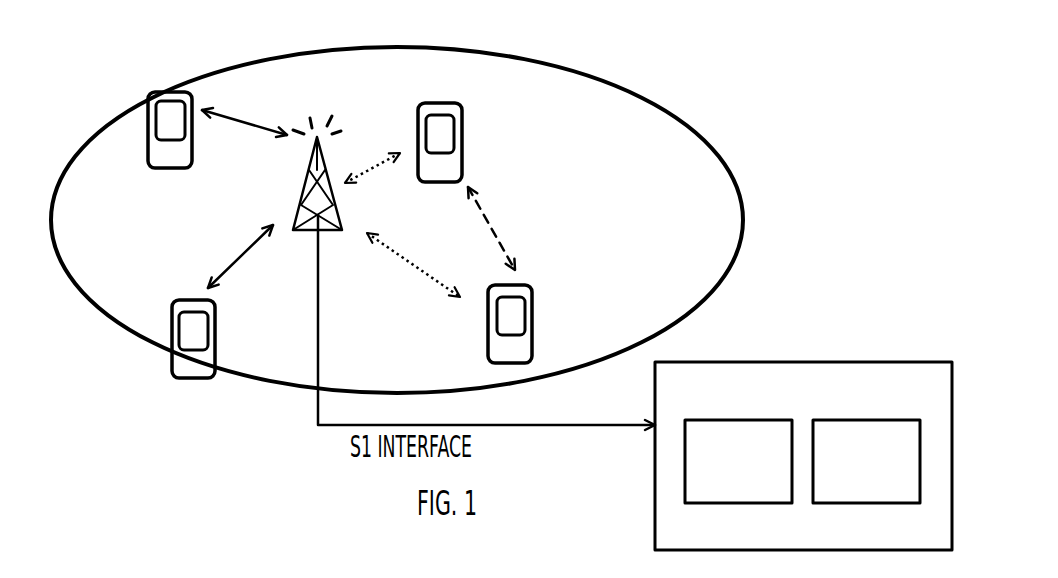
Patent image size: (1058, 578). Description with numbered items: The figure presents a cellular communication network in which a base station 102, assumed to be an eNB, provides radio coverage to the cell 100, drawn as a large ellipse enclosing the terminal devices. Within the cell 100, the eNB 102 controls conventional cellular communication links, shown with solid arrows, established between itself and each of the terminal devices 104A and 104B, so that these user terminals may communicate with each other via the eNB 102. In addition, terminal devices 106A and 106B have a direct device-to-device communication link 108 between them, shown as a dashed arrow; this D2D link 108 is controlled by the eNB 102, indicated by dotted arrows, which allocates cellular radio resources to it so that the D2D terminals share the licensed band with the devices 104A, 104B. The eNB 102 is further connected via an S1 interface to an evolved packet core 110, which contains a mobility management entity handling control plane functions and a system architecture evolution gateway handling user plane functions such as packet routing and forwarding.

The cell 100 is at (660, 107).
The base station 102 is at (310, 167).
The terminal device 104A is at (172, 328).
The terminal device 104B is at (150, 118).
The terminal device 106A is at (462, 107).
The terminal device 106B is at (532, 290).
The D2D communication link 108 is at (488, 218).
The evolved packet core 110 is at (803, 456).